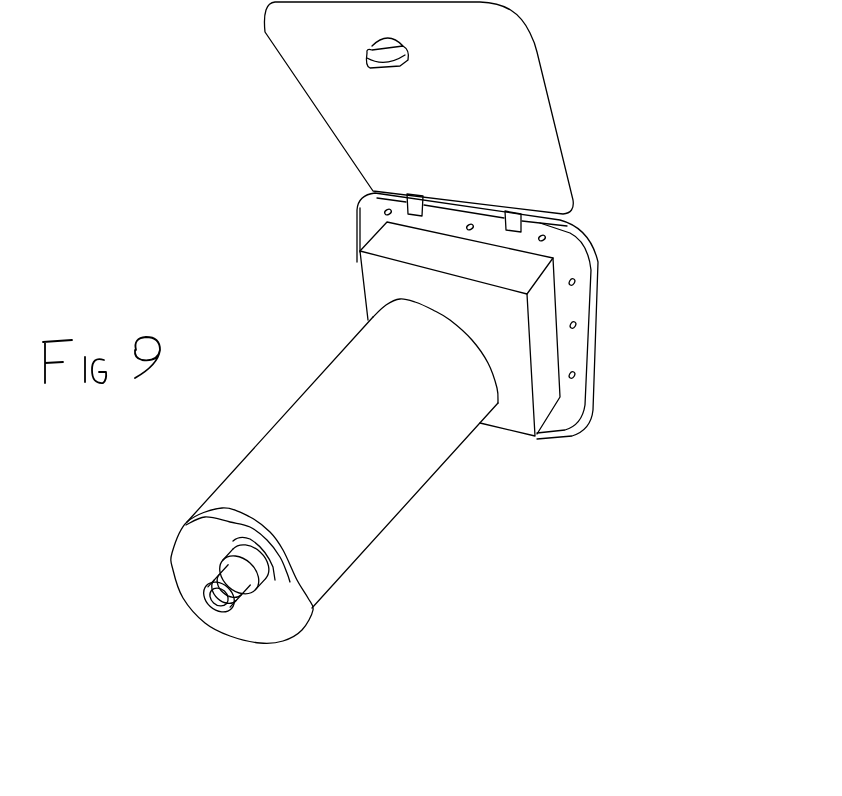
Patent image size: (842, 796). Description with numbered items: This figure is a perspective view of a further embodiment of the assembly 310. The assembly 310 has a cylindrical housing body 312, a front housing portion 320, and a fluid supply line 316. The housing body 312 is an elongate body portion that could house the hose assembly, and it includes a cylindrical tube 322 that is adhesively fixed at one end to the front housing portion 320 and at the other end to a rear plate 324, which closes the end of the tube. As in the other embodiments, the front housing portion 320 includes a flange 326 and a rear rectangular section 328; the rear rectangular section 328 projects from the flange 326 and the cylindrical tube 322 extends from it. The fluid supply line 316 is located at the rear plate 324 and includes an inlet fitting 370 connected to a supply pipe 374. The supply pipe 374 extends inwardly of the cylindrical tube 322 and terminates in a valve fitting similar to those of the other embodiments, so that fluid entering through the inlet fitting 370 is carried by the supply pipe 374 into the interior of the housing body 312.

The assembly 310 is at (200, 232).
The cylindrical housing body 312 is at (262, 437).
The fluid supply line 316 is at (224, 535).
The front housing portion 320 is at (606, 367).
The cylindrical tube 322 is at (383, 530).
The rear plate 324 is at (266, 621).
The flange 326 is at (587, 243).
The rear rectangular section 328 is at (520, 437).
The inlet fitting 370 is at (204, 612).
The supply pipe 374 is at (305, 580).